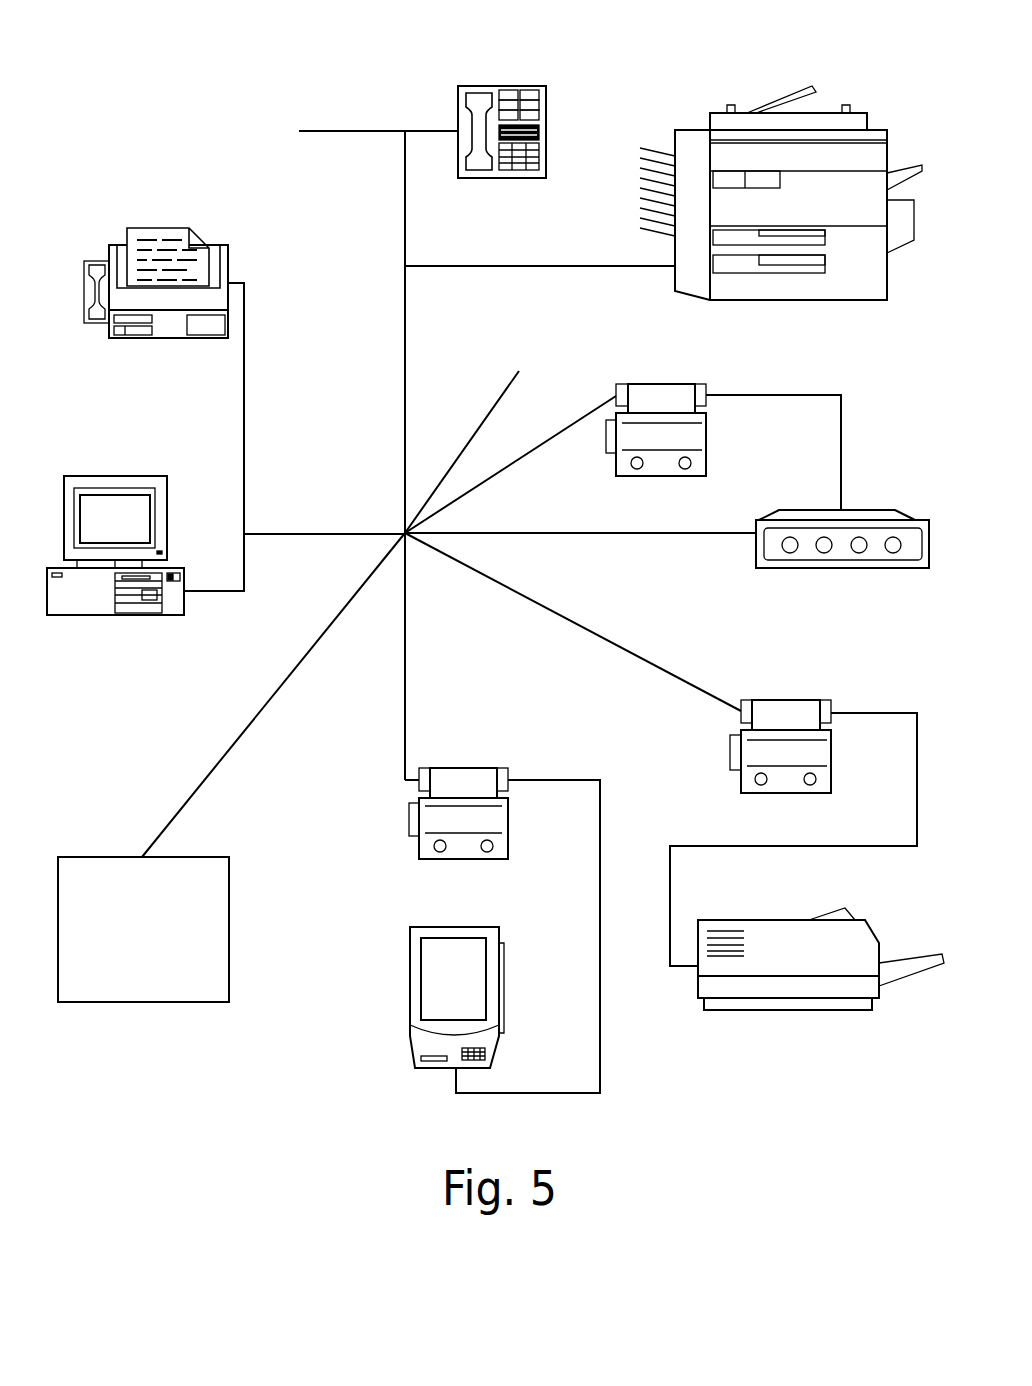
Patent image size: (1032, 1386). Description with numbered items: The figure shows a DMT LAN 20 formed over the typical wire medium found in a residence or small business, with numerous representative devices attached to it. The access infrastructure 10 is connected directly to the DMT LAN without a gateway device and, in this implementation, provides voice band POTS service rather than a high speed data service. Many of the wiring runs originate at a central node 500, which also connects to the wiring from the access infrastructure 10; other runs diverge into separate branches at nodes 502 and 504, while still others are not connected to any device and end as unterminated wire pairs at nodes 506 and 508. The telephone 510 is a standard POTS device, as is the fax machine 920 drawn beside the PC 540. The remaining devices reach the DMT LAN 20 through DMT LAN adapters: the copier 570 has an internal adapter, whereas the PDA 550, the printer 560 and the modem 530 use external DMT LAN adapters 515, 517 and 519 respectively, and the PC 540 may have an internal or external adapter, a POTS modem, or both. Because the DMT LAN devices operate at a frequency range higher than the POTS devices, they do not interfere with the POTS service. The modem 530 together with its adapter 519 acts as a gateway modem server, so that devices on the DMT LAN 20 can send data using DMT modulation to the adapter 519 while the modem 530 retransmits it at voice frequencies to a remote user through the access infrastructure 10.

The DMT LAN 20 is at (222, 112).
The access infrastructure 10 is at (102, 853).
The central node 500 is at (401, 528).
The node 502 is at (252, 528).
The node 504 is at (402, 277).
The node 506 is at (325, 127).
The node 508 is at (493, 400).
The telephone 510 is at (522, 82).
The external DMT LAN adapter 515 is at (462, 765).
The external DMT LAN adapter 517 is at (783, 698).
The external DMT LAN adapter 519 is at (660, 380).
The modem 530 is at (887, 505).
The PC 540 is at (113, 472).
The PDA 550 is at (408, 995).
The printer 560 is at (785, 917).
The copier 570 is at (743, 102).
The fax 920 is at (153, 223).